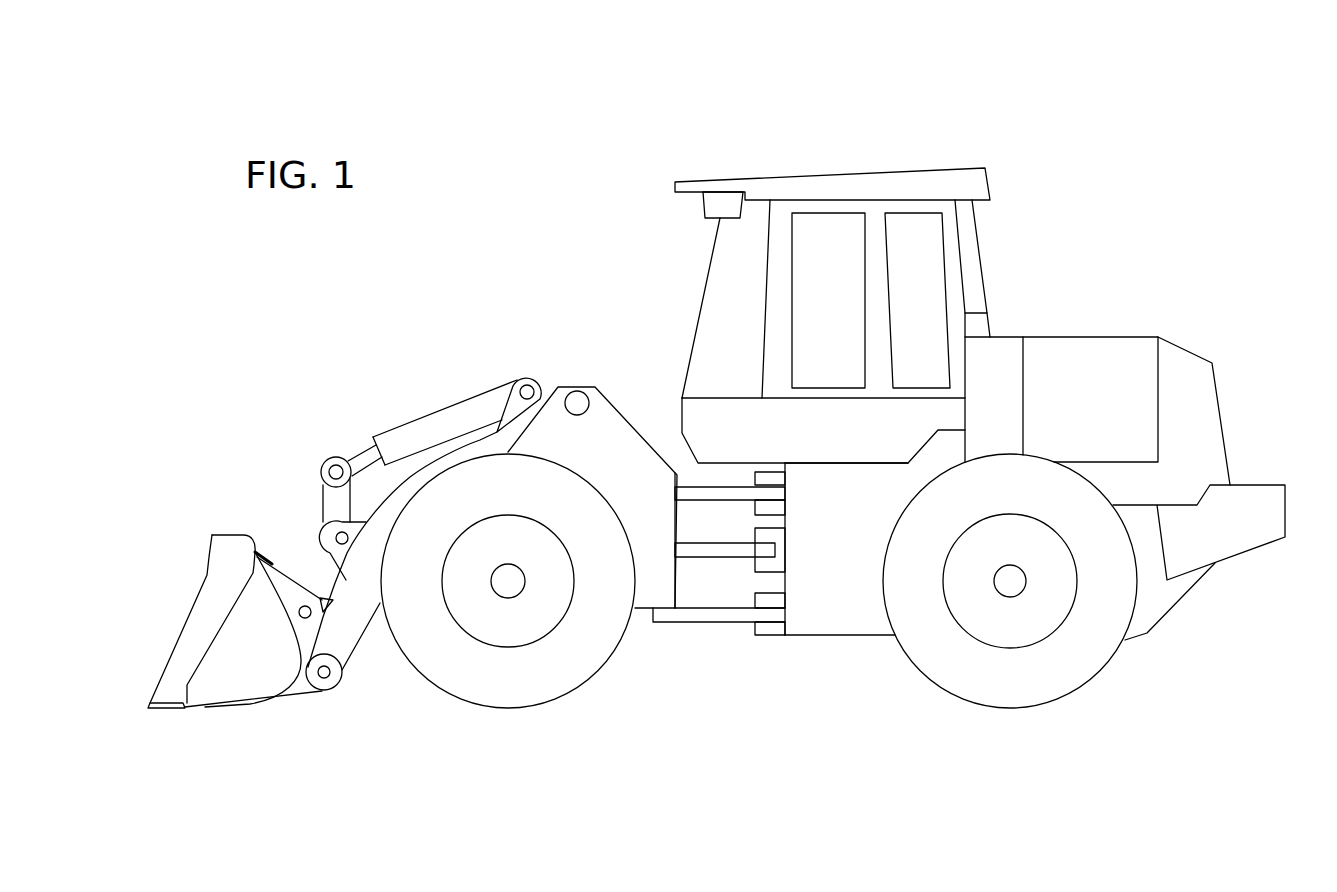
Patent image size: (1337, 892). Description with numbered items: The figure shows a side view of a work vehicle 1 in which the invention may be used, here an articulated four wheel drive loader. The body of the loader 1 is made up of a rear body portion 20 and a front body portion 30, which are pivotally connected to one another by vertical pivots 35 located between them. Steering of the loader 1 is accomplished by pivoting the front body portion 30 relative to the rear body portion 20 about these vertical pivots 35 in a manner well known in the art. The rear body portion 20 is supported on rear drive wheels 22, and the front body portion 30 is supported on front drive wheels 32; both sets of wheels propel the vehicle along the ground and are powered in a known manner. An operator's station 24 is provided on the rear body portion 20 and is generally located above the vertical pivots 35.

The work vehicle 1 is at (1103, 92).
The rear body portion 20 is at (1105, 312).
The rear drive wheels 22 is at (1030, 687).
The operator's station 24 is at (828, 147).
The front body portion 30 is at (542, 332).
The front drive wheels 32 is at (485, 692).
The vertical pivots 35 is at (750, 668).